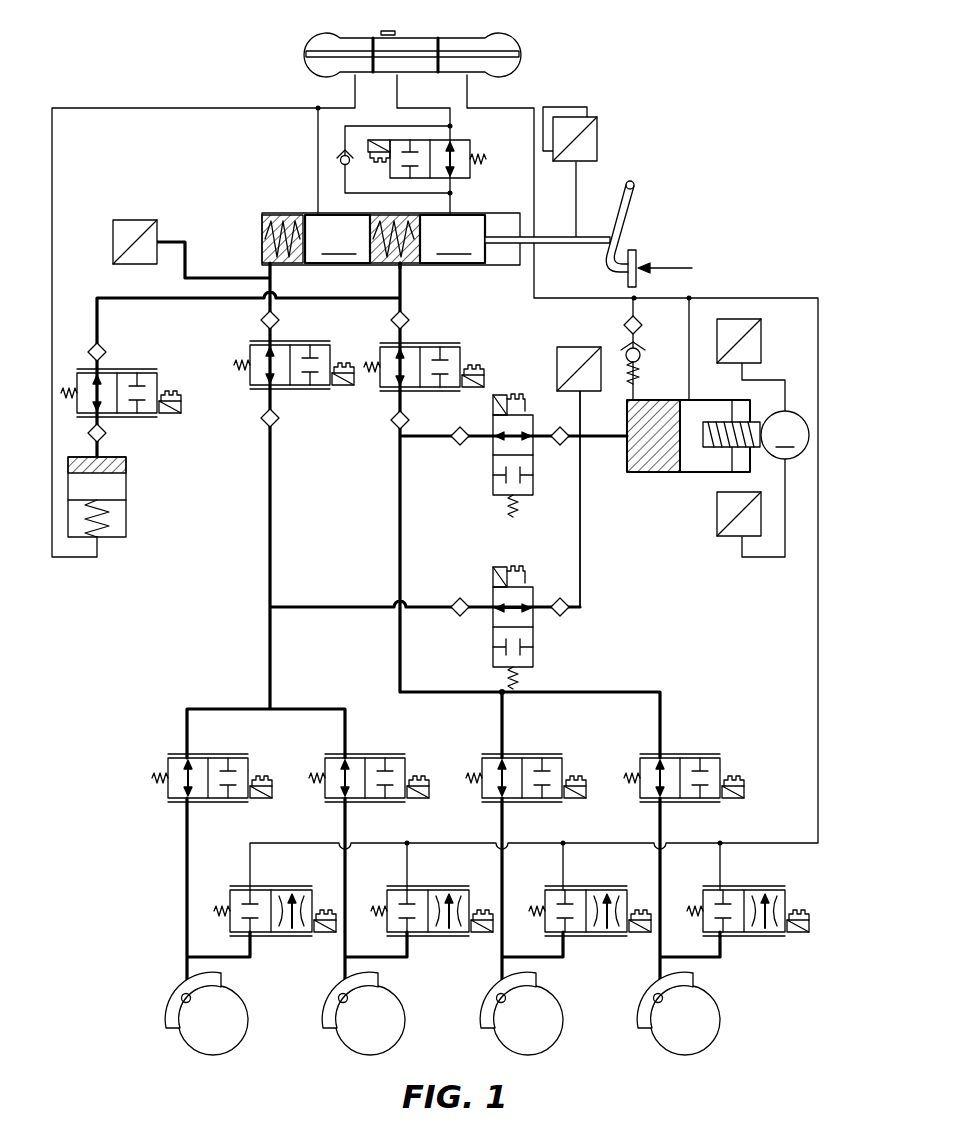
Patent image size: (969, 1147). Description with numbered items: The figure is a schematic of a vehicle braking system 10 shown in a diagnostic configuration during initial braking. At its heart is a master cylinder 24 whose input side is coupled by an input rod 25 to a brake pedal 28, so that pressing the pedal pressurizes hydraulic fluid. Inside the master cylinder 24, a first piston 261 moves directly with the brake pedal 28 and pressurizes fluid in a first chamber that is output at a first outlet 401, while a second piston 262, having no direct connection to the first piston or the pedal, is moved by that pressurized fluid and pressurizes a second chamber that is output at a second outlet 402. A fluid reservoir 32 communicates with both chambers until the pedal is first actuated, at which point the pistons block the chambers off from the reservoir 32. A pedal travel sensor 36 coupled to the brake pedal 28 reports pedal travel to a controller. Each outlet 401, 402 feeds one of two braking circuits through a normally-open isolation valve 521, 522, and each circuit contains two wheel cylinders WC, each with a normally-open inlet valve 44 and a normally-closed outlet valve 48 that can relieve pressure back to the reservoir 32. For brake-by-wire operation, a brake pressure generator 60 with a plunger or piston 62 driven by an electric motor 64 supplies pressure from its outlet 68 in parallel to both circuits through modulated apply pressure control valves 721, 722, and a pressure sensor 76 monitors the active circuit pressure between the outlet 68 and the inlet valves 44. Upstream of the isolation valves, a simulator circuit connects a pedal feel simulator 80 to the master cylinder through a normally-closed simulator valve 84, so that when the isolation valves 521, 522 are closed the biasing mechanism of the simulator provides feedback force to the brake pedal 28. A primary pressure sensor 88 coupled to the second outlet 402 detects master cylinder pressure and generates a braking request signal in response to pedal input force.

The brake system 10 is at (727, 136).
The master cylinder 24 is at (406, 228).
The input rod 25 is at (592, 237).
The first piston 261 is at (452, 239).
The second piston 262 is at (337, 239).
The brake pedal 28 is at (638, 257).
The fluid reservoir 32 is at (505, 36).
The pedal travel sensor 36 is at (600, 130).
The first outlet 401 is at (402, 268).
The second outlet 402 is at (262, 265).
The inlet valve 44 is at (218, 756).
The outlet valve 48 is at (262, 888).
The first isolation valve 521 is at (430, 346).
The second isolation valve 522 is at (300, 386).
The brake pressure generator 60 is at (733, 428).
The plunger or piston 62 is at (698, 462).
The electric motor 64 is at (799, 373).
The outlet 68 is at (627, 440).
The first apply pressure control valve 721 is at (492, 462).
The second apply pressure control valve 722 is at (492, 636).
The pressure sensor 76 is at (580, 348).
The pedal feel simulator 80 is at (127, 492).
The simulator valve 84 is at (128, 372).
The primary pressure sensor 88 is at (134, 220).
The wheel cylinder WC is at (184, 996).